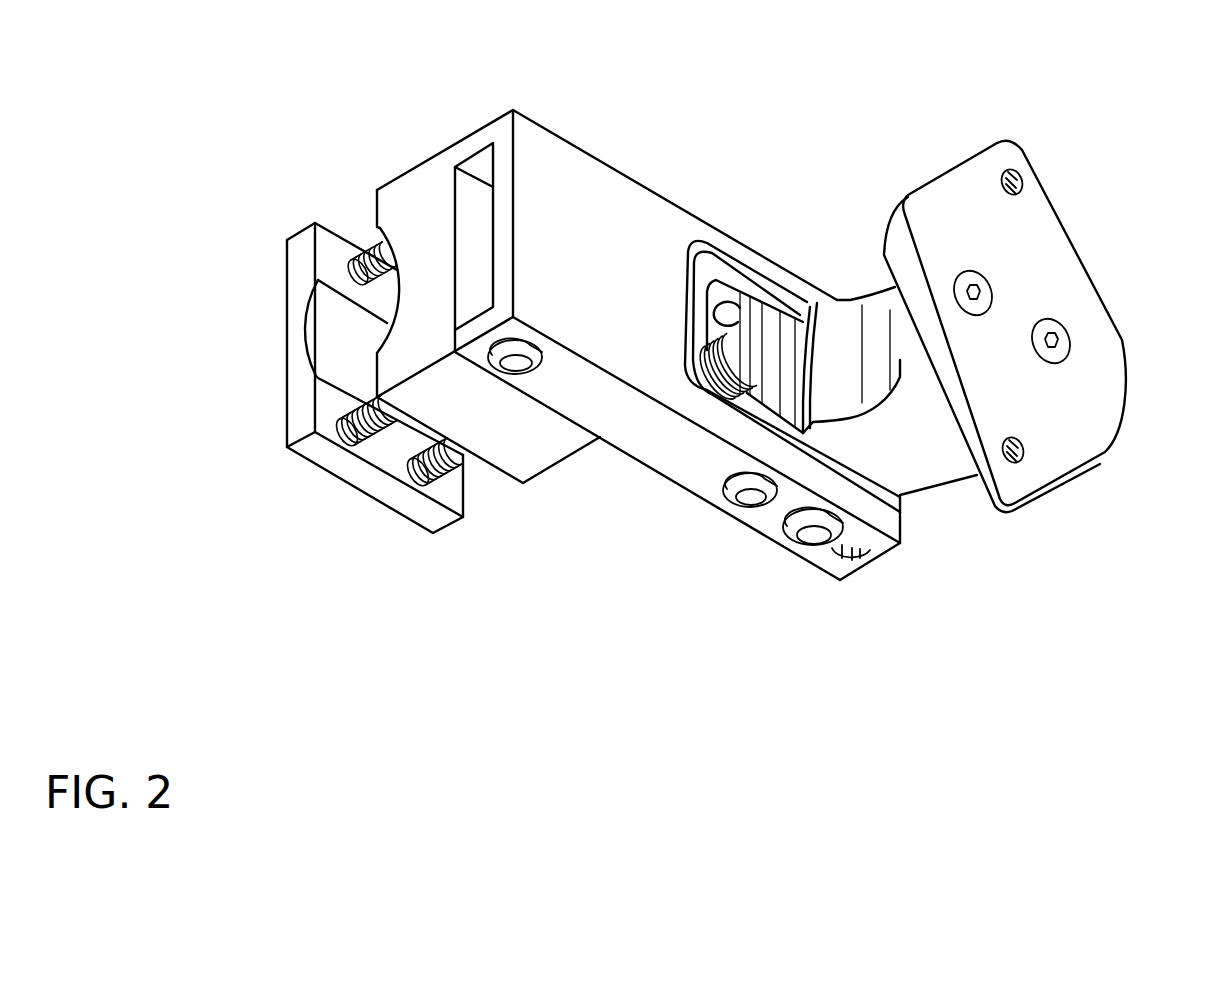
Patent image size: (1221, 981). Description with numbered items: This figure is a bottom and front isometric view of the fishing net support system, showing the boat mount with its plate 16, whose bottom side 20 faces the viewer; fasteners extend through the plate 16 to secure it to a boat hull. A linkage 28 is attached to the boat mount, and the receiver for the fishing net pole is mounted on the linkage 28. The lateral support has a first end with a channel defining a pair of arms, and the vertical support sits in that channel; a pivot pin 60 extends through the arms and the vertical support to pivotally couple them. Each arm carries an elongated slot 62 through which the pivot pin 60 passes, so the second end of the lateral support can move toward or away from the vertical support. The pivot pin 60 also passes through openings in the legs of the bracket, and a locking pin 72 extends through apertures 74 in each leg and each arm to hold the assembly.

The plate 16 is at (1062, 478).
The bottom side 20 is at (1090, 380).
The linkage 28 is at (778, 220).
The pivot pin 60 is at (812, 512).
The slot 62 is at (851, 550).
The locking pin 72 is at (752, 500).
The aperture 74 is at (727, 306).